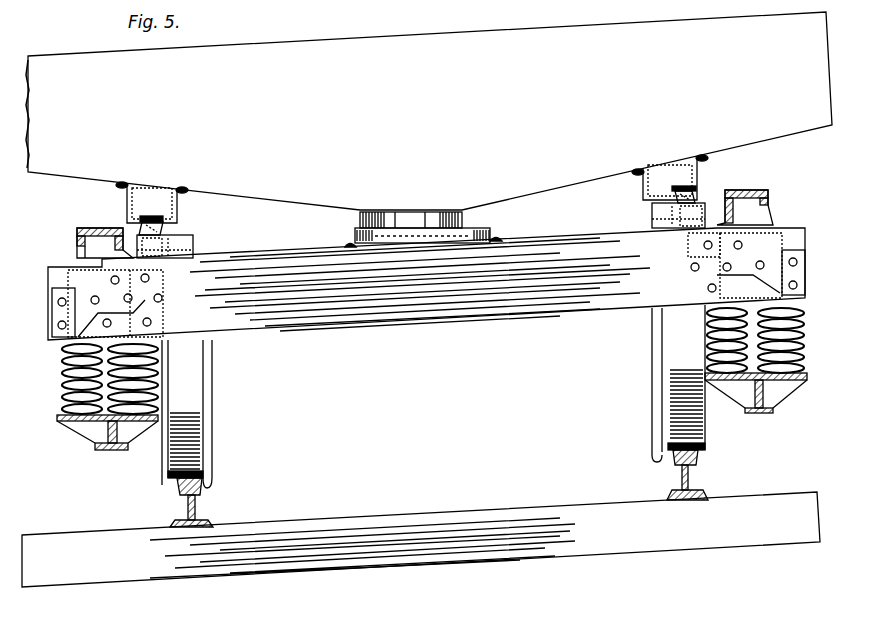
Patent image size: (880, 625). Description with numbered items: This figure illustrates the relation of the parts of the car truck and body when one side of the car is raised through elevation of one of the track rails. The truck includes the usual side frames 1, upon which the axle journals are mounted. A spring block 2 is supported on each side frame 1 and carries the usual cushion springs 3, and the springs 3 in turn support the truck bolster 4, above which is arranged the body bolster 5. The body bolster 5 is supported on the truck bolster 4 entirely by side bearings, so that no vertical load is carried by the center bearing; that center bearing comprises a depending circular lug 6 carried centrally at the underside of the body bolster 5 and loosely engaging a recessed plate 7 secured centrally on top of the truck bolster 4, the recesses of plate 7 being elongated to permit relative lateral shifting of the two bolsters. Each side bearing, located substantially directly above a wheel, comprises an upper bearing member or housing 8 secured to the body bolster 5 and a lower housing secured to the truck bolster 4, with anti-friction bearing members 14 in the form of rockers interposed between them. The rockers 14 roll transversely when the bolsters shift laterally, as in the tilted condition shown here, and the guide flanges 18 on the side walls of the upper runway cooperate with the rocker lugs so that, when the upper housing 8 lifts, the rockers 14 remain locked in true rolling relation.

The side frame 1 is at (117, 445).
The spring block 2 is at (60, 423).
The cushion springs 3 is at (63, 380).
The truck bolster 4 is at (410, 310).
The body bolster 5 is at (552, 178).
The depending circular lug 6 is at (462, 217).
The recessed plate 7 is at (187, 243).
The upper bearing member or housing 8 is at (178, 208).
The anti-friction bearing members 14 is at (150, 233).
The guide flanges 18 is at (130, 228).